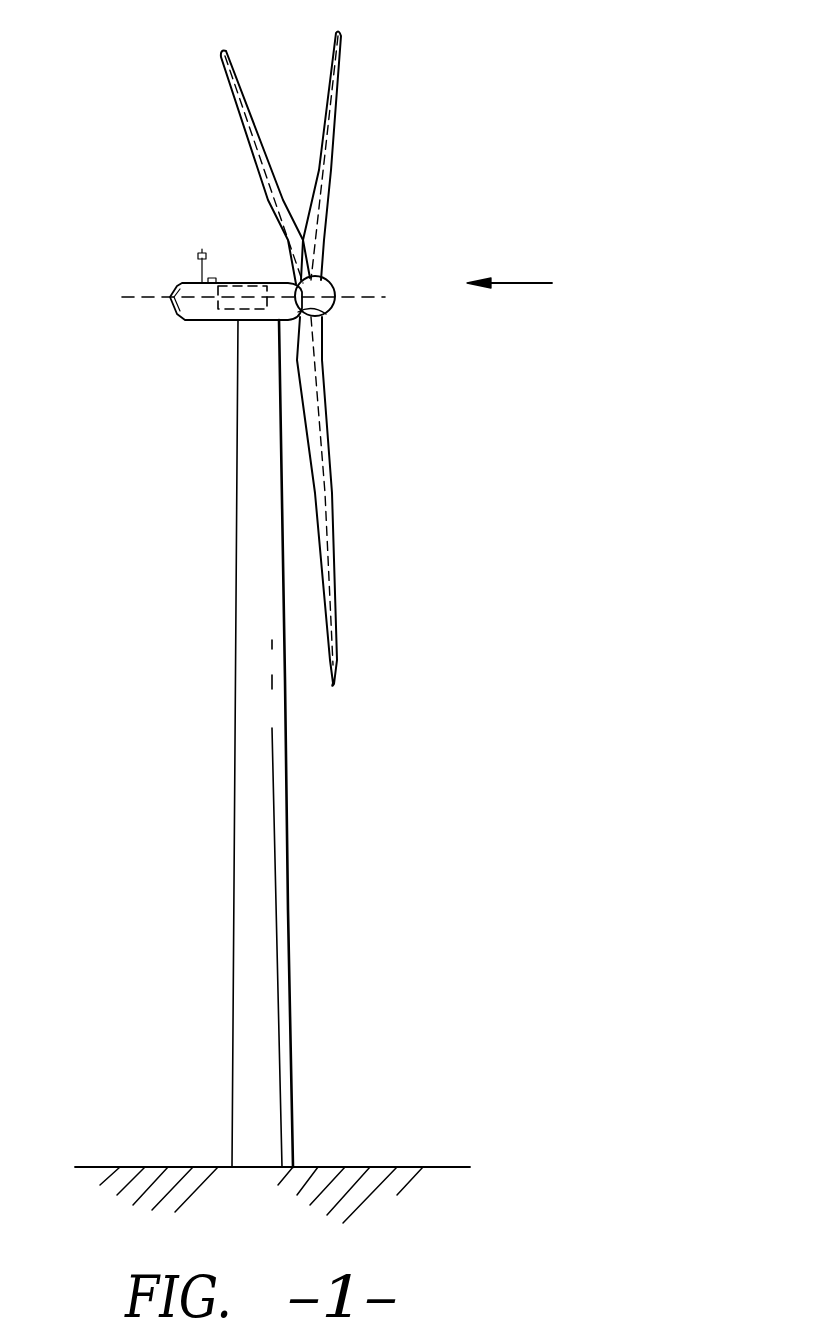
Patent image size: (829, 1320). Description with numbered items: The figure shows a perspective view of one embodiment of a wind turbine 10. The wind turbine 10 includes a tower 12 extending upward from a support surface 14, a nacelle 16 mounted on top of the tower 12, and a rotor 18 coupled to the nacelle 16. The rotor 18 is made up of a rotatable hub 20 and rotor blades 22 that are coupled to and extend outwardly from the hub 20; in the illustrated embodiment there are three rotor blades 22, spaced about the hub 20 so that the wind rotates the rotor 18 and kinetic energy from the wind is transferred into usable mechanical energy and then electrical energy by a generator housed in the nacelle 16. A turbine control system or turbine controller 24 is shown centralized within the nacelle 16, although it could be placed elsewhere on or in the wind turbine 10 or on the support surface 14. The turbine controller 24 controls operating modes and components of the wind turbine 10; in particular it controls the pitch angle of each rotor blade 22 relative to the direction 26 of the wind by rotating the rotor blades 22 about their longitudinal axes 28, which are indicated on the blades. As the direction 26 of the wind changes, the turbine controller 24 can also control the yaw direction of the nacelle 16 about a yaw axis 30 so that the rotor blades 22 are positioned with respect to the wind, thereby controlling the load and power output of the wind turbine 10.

The wind turbine 10 is at (446, 108).
The tower 12 is at (247, 858).
The support surface 14 is at (158, 1167).
The nacelle 16 is at (212, 322).
The rotor 18 is at (347, 266).
The rotatable hub 20 is at (335, 300).
The rotor blade 22 is at (332, 77).
The turbine controller 24 is at (247, 286).
The direction of the wind 26 is at (523, 283).
The longitudinal axis 28 is at (270, 202).
The yaw axis 30 is at (142, 297).